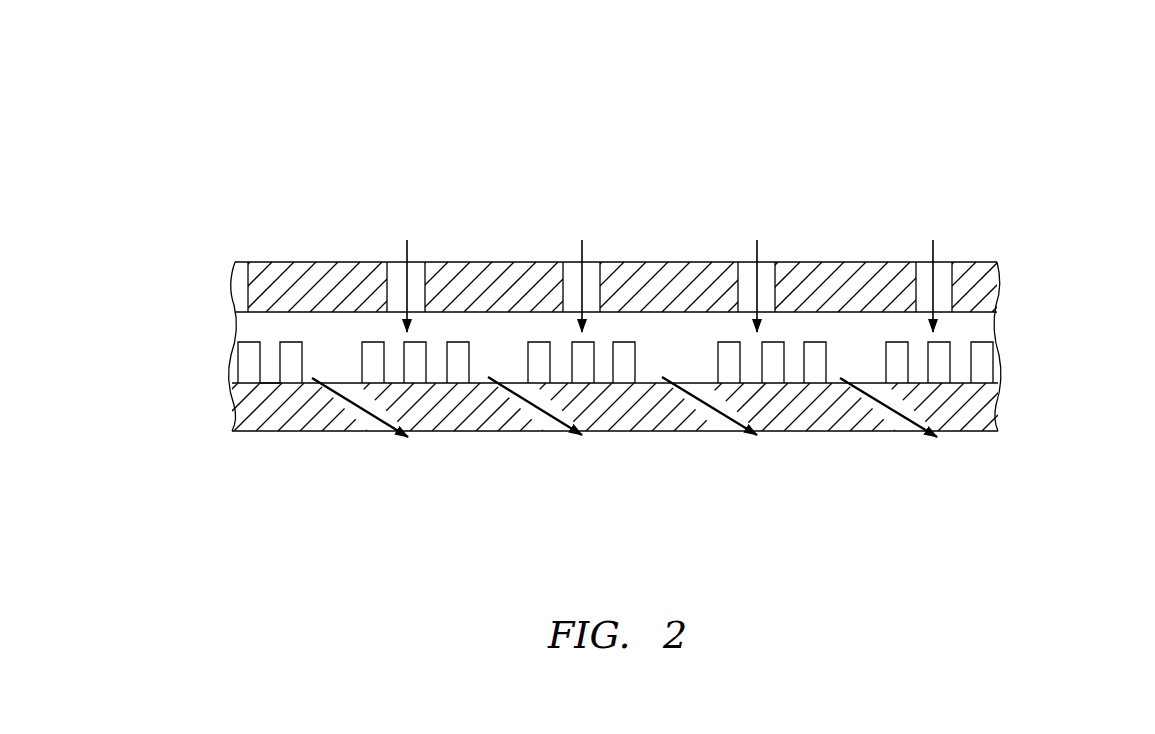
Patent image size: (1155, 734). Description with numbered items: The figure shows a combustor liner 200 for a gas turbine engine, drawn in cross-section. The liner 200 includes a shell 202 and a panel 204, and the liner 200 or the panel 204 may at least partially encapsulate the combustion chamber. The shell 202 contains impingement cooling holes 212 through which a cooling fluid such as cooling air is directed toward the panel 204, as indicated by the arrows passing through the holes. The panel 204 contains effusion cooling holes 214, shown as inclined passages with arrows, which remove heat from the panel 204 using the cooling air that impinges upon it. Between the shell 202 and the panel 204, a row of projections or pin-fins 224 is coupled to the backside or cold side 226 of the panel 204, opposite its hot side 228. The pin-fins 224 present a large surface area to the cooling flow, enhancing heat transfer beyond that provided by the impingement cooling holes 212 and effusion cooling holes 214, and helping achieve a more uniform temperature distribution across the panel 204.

The combustor liner 200 is at (620, 278).
The shell 202 is at (1000, 285).
The panel 204 is at (998, 398).
The impingement cooling holes 212 is at (572, 270).
The effusion cooling holes 214 is at (597, 430).
The pin-fins 224 is at (242, 375).
The backside/cold side 226 is at (270, 382).
The hot side 228 is at (322, 433).